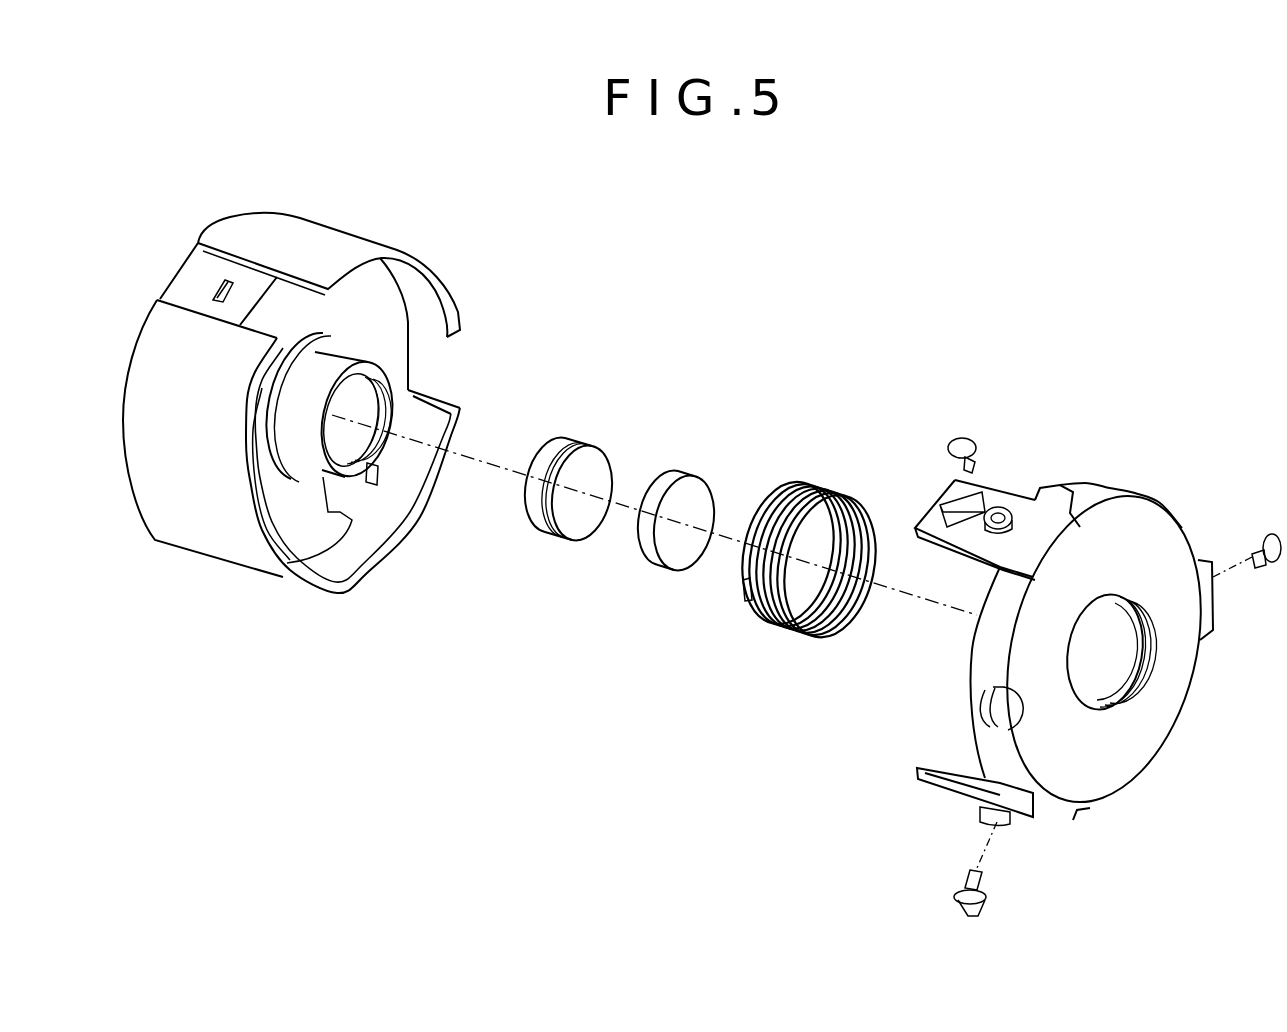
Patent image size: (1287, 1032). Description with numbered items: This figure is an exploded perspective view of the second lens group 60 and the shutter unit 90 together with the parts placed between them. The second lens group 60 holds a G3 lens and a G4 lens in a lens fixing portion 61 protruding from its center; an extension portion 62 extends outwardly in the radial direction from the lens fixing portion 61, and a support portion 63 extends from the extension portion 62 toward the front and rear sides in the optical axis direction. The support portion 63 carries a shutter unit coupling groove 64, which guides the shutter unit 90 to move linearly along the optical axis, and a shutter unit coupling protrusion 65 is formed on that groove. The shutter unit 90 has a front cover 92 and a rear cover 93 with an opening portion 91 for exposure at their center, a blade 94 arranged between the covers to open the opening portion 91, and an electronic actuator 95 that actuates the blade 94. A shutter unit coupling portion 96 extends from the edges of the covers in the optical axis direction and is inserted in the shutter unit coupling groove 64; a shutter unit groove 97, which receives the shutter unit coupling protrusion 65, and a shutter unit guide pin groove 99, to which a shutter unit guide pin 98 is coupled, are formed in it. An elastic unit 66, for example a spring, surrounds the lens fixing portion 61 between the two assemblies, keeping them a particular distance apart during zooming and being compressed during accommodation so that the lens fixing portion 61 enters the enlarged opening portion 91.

The second lens group 60 is at (407, 198).
The lens fixing portion 61 is at (388, 380).
The extension portion 62 is at (373, 328).
The support portion 63 is at (255, 218).
The shutter unit coupling groove 64 is at (200, 270).
The shutter unit coupling protrusion 65 is at (212, 287).
The elastic unit 66 is at (811, 487).
The G3 lens G3 is at (676, 478).
The G4 lens G4 is at (560, 445).
The shutter unit 90 is at (1195, 451).
The opening portion 91 is at (1082, 692).
The front cover 92 is at (1137, 665).
The rear cover 93 is at (1113, 705).
The blade 94 is at (1125, 686).
The electronic actuator 95 is at (980, 687).
The shutter unit coupling portion 96 is at (927, 525).
The shutter unit groove 97 is at (953, 512).
The shutter unit guide pin 98 is at (962, 438).
The shutter unit guide pin groove 99 is at (995, 512).